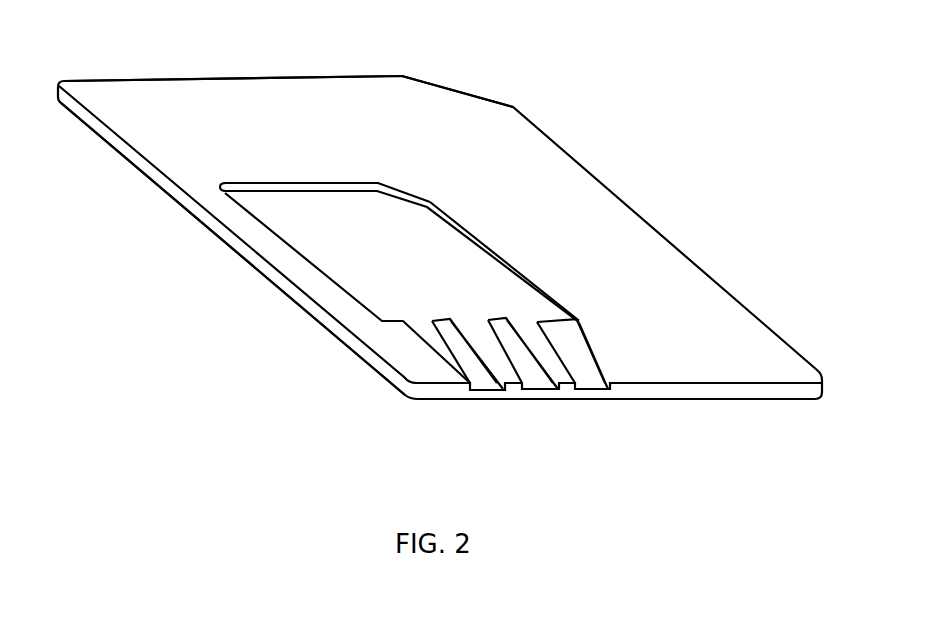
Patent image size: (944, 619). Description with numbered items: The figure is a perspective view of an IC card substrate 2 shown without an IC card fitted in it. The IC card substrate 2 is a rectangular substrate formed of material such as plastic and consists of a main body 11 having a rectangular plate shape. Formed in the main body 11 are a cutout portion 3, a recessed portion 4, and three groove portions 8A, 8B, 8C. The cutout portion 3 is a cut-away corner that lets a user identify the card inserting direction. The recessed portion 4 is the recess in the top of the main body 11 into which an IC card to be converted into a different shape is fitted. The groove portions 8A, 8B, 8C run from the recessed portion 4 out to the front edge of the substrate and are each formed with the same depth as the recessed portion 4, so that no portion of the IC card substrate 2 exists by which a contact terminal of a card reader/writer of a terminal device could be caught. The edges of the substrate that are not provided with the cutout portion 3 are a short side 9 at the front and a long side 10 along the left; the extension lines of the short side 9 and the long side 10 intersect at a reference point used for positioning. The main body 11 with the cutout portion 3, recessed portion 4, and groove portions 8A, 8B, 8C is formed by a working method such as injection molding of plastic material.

The IC card substrate 2 is at (257, 89).
The main body 11 is at (298, 77).
The cutout portion 3 is at (455, 90).
The recessed portion 4 is at (315, 200).
The groove portion 8A is at (487, 388).
The groove portion 8B is at (539, 388).
The groove portion 8C is at (590, 388).
The short side 9 is at (683, 392).
The long side 10 is at (211, 231).